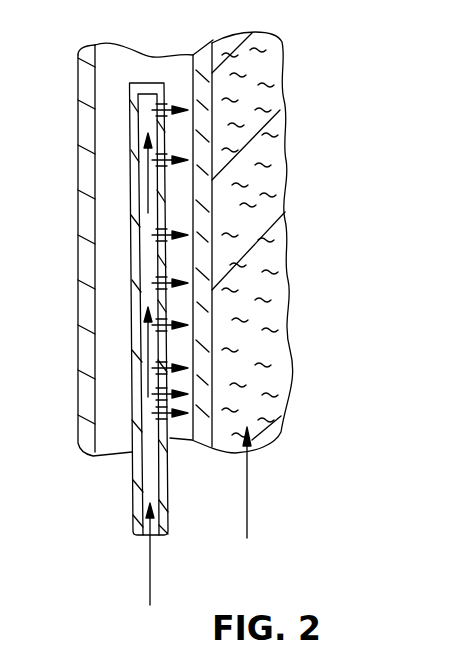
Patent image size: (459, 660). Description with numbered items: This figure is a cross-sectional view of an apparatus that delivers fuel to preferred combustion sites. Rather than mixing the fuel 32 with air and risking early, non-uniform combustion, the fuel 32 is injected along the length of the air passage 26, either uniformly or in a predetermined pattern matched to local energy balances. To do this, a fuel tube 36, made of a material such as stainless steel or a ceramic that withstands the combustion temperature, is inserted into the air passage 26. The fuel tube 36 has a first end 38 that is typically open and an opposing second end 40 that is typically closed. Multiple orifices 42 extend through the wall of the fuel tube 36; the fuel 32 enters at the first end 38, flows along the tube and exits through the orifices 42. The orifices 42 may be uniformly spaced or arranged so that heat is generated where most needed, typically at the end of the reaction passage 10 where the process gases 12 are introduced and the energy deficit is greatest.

The reaction passage 10 is at (268, 100).
The process gases 12 is at (249, 497).
The air passage 26 is at (108, 155).
The fuel 32 is at (151, 590).
The fuel tube 36 is at (131, 307).
The first end 38 is at (168, 525).
The second end 40 is at (148, 92).
The multiple orifices 42 is at (170, 223).